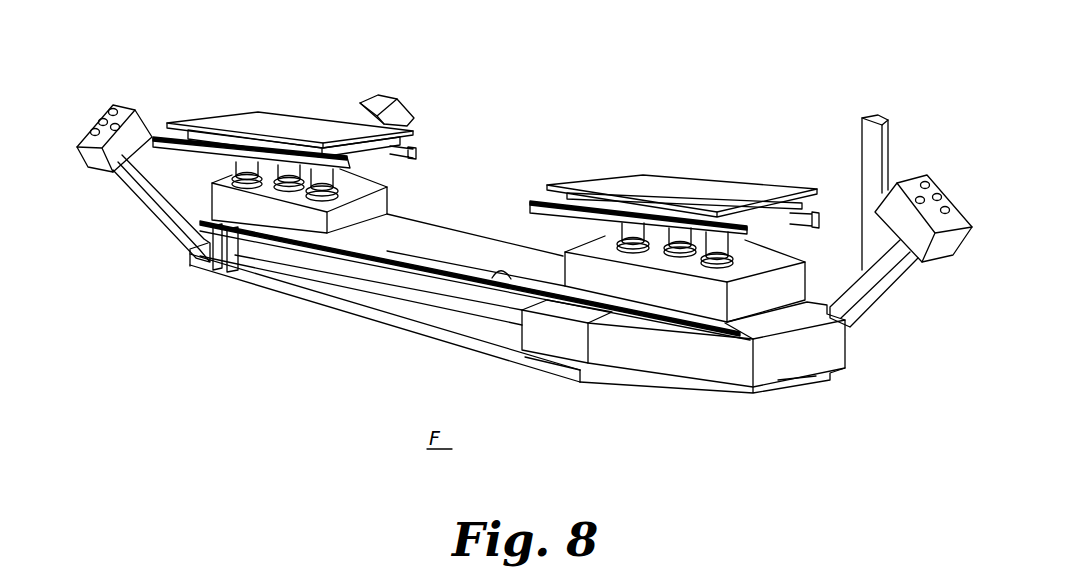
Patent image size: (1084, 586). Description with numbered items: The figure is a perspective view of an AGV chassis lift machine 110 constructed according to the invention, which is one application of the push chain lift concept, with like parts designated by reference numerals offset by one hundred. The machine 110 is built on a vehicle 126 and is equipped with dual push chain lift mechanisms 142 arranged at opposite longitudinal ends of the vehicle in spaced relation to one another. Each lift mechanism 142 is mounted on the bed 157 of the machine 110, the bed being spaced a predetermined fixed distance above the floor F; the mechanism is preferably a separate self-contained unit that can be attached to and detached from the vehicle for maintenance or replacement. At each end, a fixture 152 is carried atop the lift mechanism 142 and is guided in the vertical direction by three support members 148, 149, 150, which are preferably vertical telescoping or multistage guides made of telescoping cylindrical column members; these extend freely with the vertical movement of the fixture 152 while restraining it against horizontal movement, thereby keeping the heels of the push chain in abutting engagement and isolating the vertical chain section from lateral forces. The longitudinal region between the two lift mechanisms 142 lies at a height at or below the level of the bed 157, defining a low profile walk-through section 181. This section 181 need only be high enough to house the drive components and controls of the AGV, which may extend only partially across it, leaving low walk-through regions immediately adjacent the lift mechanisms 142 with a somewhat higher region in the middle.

The AGV chassis lift machine 110 is at (561, 147).
The vehicle 126 is at (420, 292).
The push chain lift mechanism 142 is at (544, 227).
The support member 148 is at (321, 190).
The support member 149 is at (244, 172).
The support member 150 is at (283, 191).
The fixture 152 is at (303, 123).
The bed 157 is at (497, 280).
The low profile walk-through section 181 is at (404, 232).